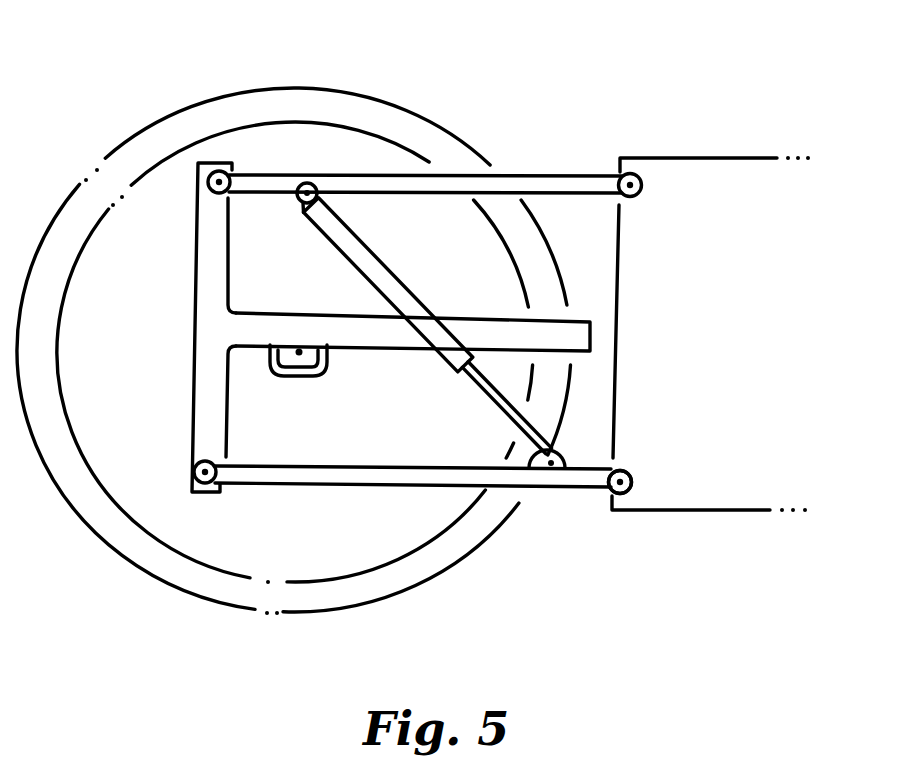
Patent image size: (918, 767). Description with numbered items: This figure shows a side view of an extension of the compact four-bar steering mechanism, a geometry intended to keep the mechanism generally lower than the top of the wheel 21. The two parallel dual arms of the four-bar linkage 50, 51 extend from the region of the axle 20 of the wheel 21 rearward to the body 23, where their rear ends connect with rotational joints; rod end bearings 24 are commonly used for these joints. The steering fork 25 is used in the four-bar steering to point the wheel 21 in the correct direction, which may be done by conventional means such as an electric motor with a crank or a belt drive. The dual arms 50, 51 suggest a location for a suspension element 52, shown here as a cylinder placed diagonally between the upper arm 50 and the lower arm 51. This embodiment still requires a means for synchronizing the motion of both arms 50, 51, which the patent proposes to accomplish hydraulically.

The wheel 21 is at (217, 100).
The arm of the four-bar linkage 50 is at (558, 175).
The arm of the four-bar linkage 51 is at (352, 484).
The suspension element 52 is at (364, 287).
The steering fork 25 is at (482, 318).
The axle 20 is at (327, 360).
The body 23 is at (880, 402).
The rod end bearing 24 is at (597, 500).